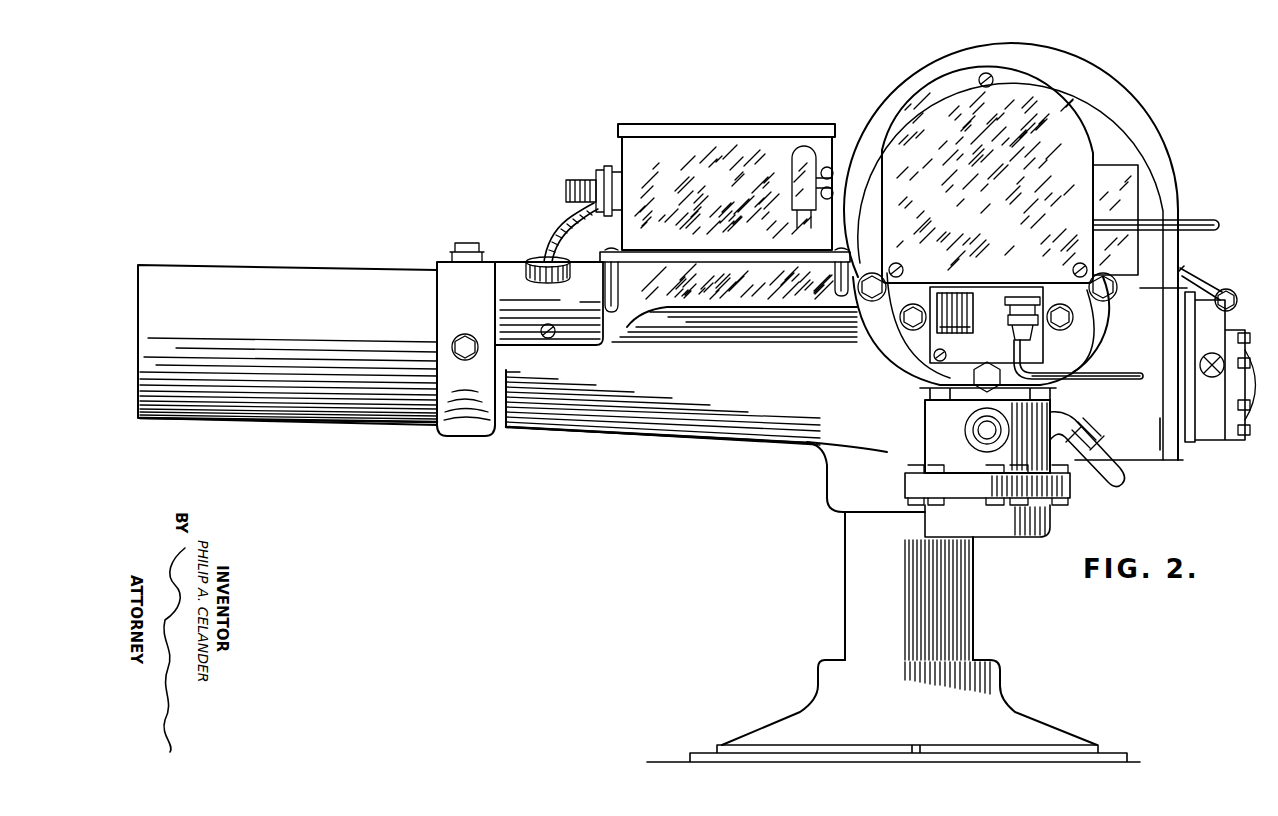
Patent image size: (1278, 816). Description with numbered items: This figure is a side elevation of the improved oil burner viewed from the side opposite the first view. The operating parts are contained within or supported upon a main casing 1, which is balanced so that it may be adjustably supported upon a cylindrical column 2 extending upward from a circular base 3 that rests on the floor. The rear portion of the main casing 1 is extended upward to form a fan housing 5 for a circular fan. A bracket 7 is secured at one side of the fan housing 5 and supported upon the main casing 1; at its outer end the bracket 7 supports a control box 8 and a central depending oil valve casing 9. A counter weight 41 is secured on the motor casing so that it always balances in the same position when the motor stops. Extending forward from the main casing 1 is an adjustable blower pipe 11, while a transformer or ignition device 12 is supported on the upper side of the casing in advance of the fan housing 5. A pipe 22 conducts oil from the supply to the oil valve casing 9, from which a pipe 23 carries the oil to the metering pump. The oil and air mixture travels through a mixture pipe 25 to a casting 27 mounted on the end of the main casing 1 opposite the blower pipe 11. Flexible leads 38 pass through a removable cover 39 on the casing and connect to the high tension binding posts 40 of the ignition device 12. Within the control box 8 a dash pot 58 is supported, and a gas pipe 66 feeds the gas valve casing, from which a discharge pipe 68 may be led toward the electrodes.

The main casing 1 is at (697, 427).
The cylindrical column 2 is at (962, 595).
The circular base 3 is at (1020, 722).
The fan housing 5 is at (1086, 64).
The bracket 7 is at (1098, 340).
The control box 8 is at (1080, 153).
The oil valve casing 9 is at (935, 437).
The blower pipe 11 is at (273, 277).
The transformer or ignition device 12 is at (718, 147).
The pipe 22 is at (966, 426).
The pipe 23 is at (1110, 482).
The mixture pipe 25 is at (1198, 270).
The casting 27 is at (1232, 390).
The flexible leads 38 is at (555, 238).
The removable cover 39 is at (503, 272).
The high tension binding posts 40 is at (595, 170).
The counter weight 41 is at (1140, 193).
The dash pot 58 is at (950, 310).
The pipe 66 is at (1095, 380).
The discharge pipe 68 is at (1150, 210).